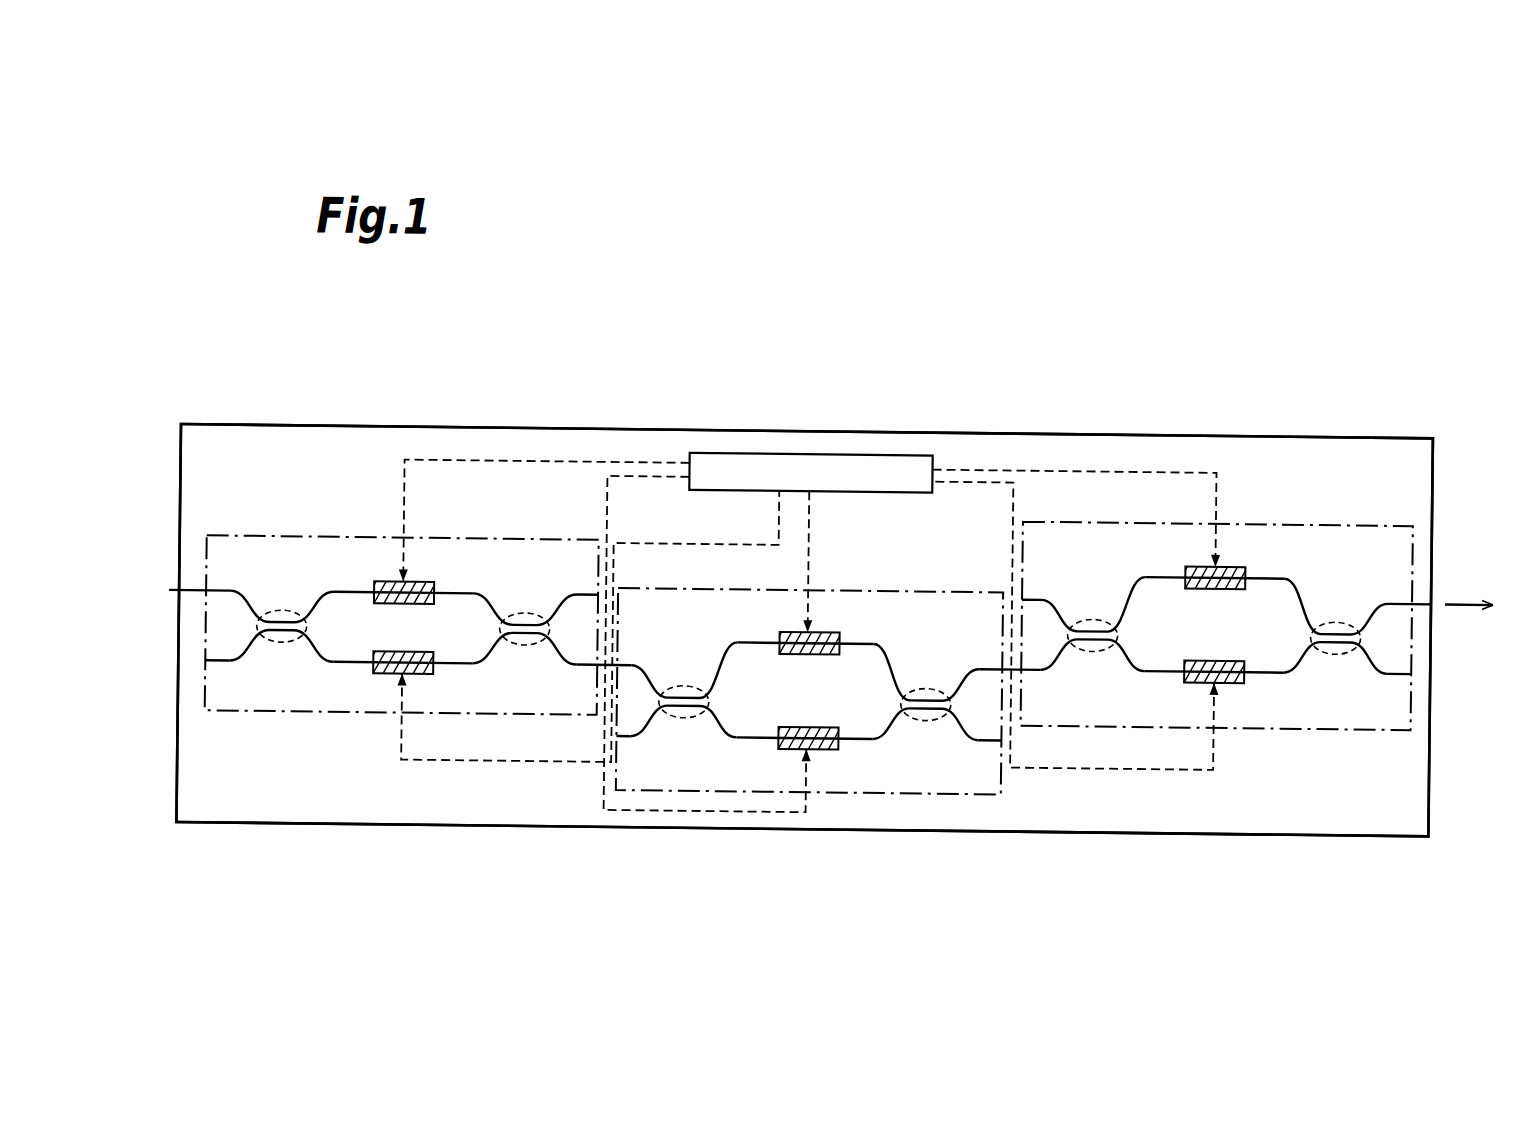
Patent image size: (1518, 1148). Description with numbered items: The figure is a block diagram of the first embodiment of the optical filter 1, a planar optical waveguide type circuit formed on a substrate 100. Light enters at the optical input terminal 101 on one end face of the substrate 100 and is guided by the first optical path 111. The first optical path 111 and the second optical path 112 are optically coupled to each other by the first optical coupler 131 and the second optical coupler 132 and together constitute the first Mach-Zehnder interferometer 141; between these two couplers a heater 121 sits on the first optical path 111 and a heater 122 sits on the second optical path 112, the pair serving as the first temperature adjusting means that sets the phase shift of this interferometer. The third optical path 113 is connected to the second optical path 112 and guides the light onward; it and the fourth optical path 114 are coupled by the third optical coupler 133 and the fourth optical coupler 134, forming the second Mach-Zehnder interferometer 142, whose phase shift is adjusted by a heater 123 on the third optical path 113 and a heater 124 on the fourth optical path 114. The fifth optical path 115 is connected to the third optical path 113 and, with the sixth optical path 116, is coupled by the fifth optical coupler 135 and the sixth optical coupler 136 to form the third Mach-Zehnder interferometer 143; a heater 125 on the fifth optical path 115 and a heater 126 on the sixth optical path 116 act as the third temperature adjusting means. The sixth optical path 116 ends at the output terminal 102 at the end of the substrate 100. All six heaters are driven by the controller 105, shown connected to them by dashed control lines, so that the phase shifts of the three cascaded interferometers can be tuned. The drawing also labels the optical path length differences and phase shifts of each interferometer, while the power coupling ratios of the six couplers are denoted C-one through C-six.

The optical filter 1 is at (1014, 356).
The substrate 100 is at (702, 424).
The optical input terminal 101 is at (173, 590).
The output terminal 102 is at (1442, 592).
The controller 105 is at (845, 447).
The first optical path 111 is at (355, 588).
The second optical path 112 is at (340, 661).
The third optical path 113 is at (762, 636).
The fourth optical path 114 is at (749, 736).
The fifth optical path 115 is at (1154, 664).
The sixth optical path 116 is at (1162, 566).
The heater 121 is at (415, 579).
The heater 122 is at (415, 672).
The heater 123 is at (825, 626).
The heater 124 is at (825, 745).
The heater 125 is at (1232, 672).
The heater 126 is at (1229, 555).
The first optical coupler 131 is at (269, 639).
The second optical coupler 132 is at (524, 639).
The third optical coupler 133 is at (679, 709).
The fourth optical coupler 134 is at (929, 712).
The fifth optical coupler 135 is at (1084, 638).
The sixth optical coupler 136 is at (1337, 644).
The first Mach-Zehnder interferometer 141 is at (329, 710).
The second Mach-Zehnder interferometer 142 is at (959, 583).
The third Mach-Zehnder interferometer 143 is at (1295, 716).